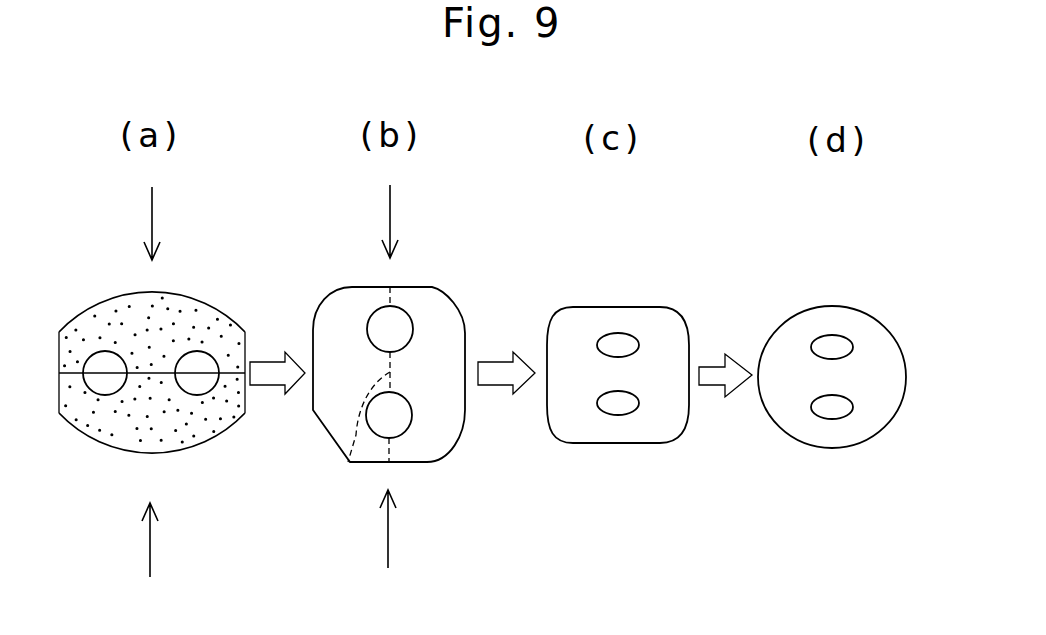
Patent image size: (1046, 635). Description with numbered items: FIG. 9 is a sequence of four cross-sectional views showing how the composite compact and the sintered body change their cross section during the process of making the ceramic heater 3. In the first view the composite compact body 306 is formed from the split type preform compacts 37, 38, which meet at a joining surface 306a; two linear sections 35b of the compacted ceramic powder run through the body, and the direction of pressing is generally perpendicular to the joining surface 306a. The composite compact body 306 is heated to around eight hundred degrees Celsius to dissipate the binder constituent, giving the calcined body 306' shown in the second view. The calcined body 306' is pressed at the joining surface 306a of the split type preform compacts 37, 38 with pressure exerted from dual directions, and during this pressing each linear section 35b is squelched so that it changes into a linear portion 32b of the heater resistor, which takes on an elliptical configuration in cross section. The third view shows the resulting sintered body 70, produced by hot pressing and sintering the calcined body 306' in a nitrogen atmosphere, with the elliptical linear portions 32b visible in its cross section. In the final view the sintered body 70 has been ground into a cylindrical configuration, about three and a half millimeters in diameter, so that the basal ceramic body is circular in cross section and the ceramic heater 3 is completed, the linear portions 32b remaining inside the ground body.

The composite compact body 306 is at (154, 323).
The joining surface 306a is at (150, 372).
The calcined body 306' is at (422, 358).
The split type preform compact 38 is at (95, 320).
The split type preform compact 37 is at (95, 428).
The linear section of the compacted ceramic powder 35b is at (117, 393).
The sintered body 70 is at (587, 307).
The linear portion of the heater resistor 32b is at (618, 340).
The ceramic heater 3 is at (820, 291).